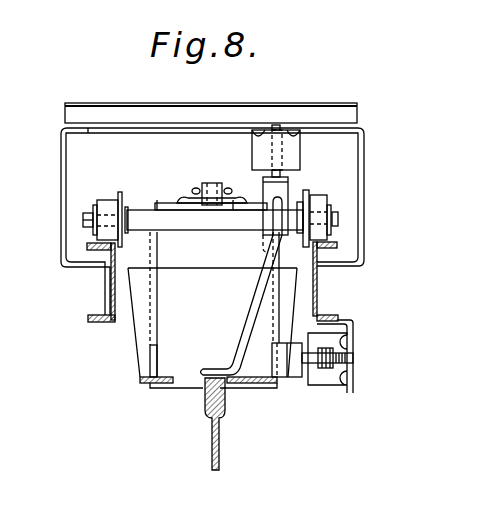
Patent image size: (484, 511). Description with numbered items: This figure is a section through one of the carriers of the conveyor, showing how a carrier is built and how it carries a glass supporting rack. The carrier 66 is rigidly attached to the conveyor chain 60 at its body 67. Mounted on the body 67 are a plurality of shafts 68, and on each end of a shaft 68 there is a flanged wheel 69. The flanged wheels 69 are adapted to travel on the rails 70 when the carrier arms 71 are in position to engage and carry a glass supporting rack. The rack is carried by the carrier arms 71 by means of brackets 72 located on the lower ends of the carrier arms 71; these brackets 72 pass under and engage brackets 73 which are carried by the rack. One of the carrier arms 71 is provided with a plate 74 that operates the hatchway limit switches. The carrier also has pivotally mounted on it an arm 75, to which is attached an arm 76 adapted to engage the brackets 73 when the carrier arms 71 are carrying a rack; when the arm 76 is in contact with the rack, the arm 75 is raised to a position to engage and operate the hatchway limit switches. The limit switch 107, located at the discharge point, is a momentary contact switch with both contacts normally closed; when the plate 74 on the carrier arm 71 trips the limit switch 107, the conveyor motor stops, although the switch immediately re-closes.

The conveyor chain 60 is at (202, 193).
The carrier 66 is at (172, 163).
The carrier body 67 is at (225, 190).
The shaft 68 is at (218, 220).
The flanged wheel 69 is at (105, 200).
The rail 70 is at (108, 305).
The carrier arm 71 is at (145, 337).
The bracket 72 is at (170, 385).
The bracket 73 is at (223, 413).
The plate 74 is at (308, 385).
The arm 75 is at (282, 190).
The arm 76 is at (257, 308).
The limit switch 107 is at (353, 358).